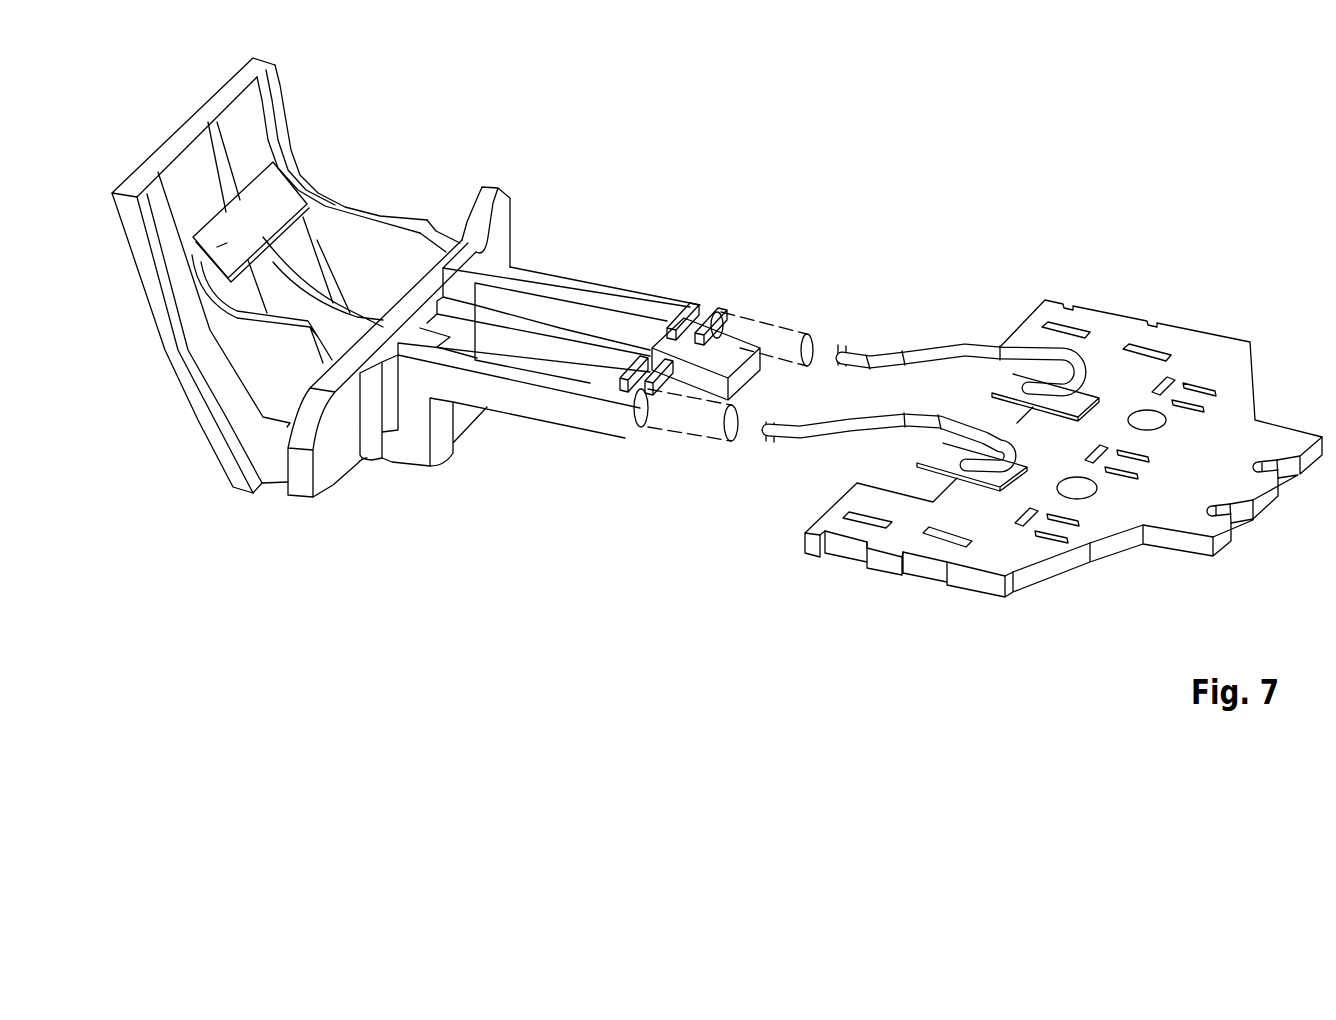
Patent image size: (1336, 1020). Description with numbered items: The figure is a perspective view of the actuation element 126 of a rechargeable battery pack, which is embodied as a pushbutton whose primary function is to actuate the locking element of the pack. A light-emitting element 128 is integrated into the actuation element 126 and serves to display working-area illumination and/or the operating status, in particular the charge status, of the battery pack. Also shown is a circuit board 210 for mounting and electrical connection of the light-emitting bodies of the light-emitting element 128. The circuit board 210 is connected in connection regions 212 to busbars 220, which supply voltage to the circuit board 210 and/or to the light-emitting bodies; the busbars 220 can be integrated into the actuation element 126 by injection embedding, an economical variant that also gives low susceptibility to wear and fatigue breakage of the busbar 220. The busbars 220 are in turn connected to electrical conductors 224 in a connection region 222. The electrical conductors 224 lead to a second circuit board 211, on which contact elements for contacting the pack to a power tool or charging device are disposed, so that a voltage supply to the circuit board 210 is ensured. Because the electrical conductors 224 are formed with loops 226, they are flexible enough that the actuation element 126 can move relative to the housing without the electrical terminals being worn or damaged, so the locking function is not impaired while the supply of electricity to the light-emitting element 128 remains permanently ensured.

The actuation element 126 is at (160, 152).
The light-emitting element 128 is at (167, 327).
The circuit board 210 is at (283, 170).
The circuit board 211 is at (1193, 357).
The connection regions 212 is at (291, 191).
The busbars 220 is at (543, 383).
The connection region 222 is at (826, 350).
The electrical conductors 224 is at (920, 350).
The loops 226 is at (1033, 353).